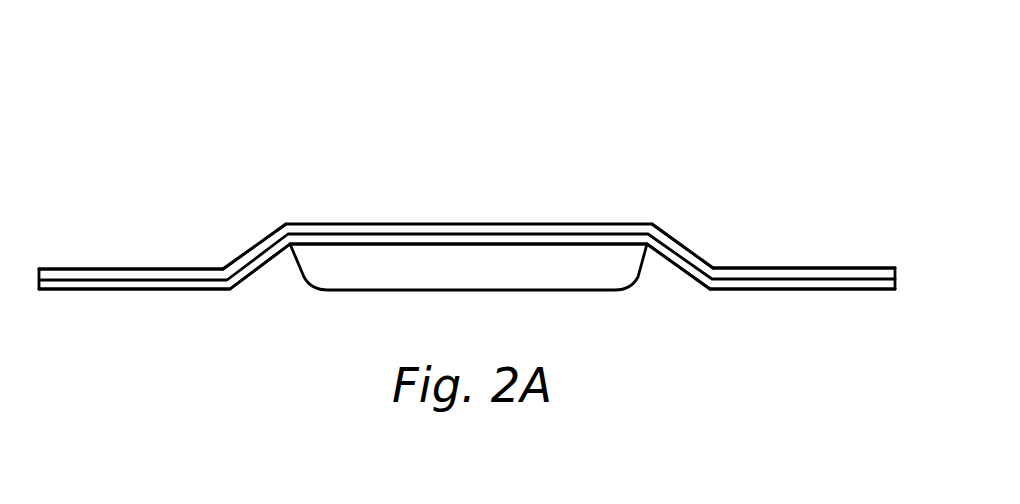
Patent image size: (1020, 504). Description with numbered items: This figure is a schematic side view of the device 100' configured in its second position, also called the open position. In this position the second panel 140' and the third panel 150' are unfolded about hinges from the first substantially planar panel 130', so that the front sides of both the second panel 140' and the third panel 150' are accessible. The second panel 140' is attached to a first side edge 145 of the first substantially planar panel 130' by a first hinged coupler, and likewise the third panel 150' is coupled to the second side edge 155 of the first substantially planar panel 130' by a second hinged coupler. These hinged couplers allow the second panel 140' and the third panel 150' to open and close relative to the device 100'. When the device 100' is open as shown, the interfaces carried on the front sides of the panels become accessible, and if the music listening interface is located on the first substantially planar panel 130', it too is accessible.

The device 100' is at (463, 158).
The first substantially planar panel 130' is at (468, 218).
The second panel 140' is at (134, 243).
The third panel 150' is at (802, 243).
The first side edge 145 is at (253, 248).
The second side edge 155 is at (683, 247).